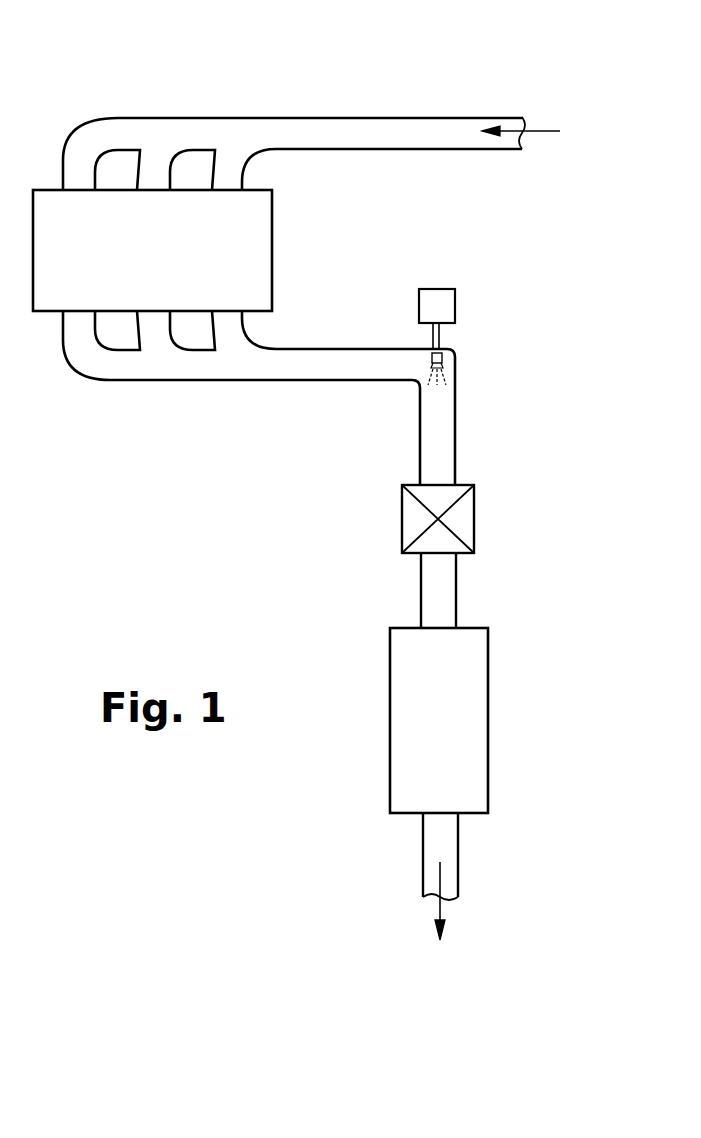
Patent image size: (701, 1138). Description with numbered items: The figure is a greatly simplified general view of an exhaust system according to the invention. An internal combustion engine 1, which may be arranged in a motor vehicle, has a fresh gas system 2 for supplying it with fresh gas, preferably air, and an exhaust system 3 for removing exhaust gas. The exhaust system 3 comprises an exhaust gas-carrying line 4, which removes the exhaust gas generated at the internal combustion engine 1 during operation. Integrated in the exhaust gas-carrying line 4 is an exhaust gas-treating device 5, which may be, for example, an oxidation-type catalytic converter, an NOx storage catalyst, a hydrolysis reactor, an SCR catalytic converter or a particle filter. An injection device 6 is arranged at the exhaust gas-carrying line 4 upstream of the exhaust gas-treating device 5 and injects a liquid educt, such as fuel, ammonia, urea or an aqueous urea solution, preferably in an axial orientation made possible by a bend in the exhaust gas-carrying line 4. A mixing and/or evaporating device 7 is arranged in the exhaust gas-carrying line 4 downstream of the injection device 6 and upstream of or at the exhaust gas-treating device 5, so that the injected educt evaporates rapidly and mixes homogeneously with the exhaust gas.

The internal combustion engine 1 is at (161, 265).
The fresh gas system 2 is at (414, 118).
The exhaust system 3 is at (308, 380).
The exhaust gas-carrying line 4 is at (440, 597).
The exhaust gas-treating device 5 is at (447, 733).
The injection device 6 is at (440, 308).
The mixing and/or evaporating device 7 is at (462, 520).